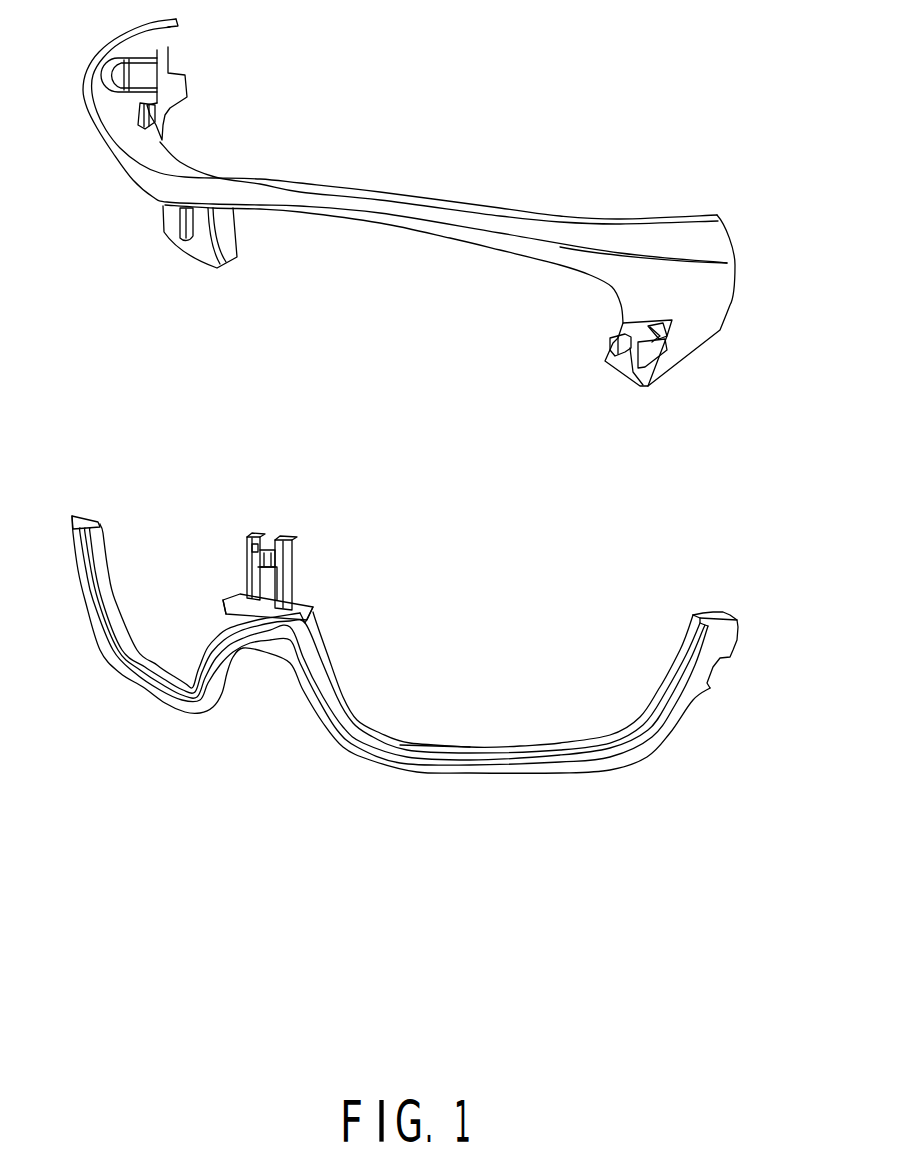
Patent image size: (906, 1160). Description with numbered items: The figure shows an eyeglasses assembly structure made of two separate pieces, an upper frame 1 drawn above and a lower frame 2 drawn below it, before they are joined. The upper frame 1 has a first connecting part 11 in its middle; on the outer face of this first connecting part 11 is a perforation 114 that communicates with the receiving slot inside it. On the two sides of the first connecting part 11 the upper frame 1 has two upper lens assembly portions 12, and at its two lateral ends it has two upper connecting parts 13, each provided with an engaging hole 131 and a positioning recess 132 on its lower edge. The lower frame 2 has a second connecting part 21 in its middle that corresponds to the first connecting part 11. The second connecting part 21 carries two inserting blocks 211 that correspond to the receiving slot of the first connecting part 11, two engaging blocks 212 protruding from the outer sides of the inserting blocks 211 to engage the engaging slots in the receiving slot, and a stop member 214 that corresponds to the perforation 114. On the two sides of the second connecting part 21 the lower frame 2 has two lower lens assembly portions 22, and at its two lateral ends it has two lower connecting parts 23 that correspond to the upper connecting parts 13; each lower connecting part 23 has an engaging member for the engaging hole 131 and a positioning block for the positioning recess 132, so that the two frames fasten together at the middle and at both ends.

The upper frame 1 is at (310, 188).
The first connecting part 11 is at (205, 247).
The perforation 114 is at (183, 215).
The upper lens assembly portion 12 is at (327, 217).
The upper connecting part 13 is at (147, 93).
The engaging hole 131 is at (660, 322).
The positioning recess 132 is at (143, 133).
The lower frame 2 is at (352, 750).
The second connecting part 21 is at (310, 603).
The inserting block 211 is at (270, 540).
The engaging block 212 is at (247, 537).
The stop member 214 is at (264, 560).
The lower lens assembly portion 22 is at (482, 750).
The lower connecting part 23 is at (740, 637).